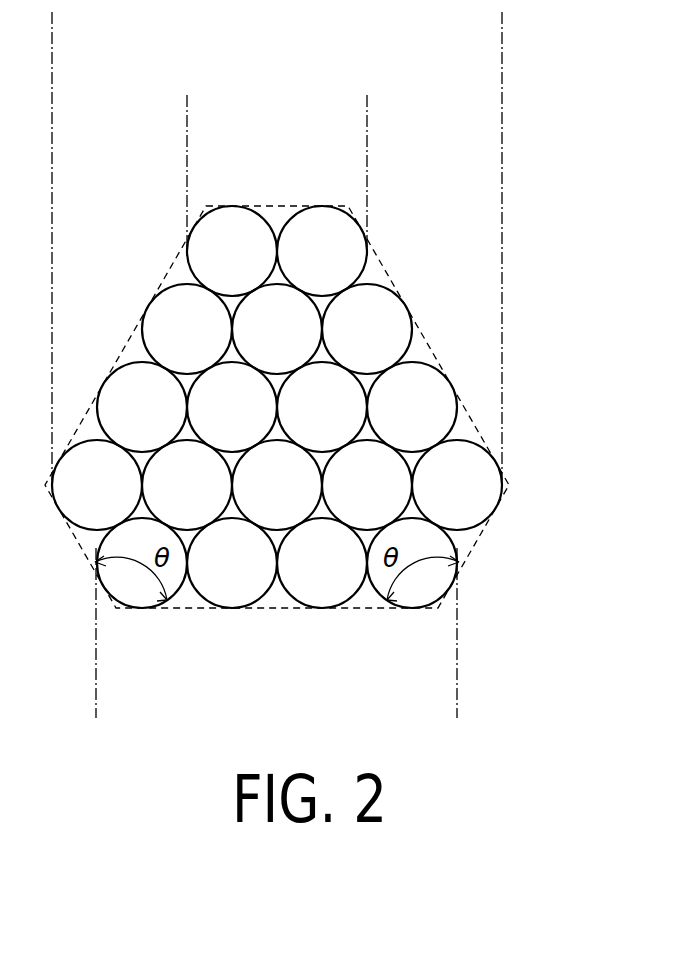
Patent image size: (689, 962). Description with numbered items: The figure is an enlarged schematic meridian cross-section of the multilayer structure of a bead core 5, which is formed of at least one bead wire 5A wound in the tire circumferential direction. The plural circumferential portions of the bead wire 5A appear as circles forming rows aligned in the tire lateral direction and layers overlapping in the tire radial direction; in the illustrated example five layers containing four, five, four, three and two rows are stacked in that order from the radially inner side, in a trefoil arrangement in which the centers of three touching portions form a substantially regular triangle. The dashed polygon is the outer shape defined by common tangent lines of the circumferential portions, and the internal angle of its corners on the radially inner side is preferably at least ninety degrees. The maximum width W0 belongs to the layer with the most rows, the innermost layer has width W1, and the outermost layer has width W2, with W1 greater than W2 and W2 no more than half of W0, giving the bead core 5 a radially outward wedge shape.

The bead core 5 is at (388, 247).
The bead wire 5A is at (413, 407).
The maximum width W0 is at (502, 40).
The innermost layer width W1 is at (457, 690).
The outermost layer width W2 is at (367, 123).